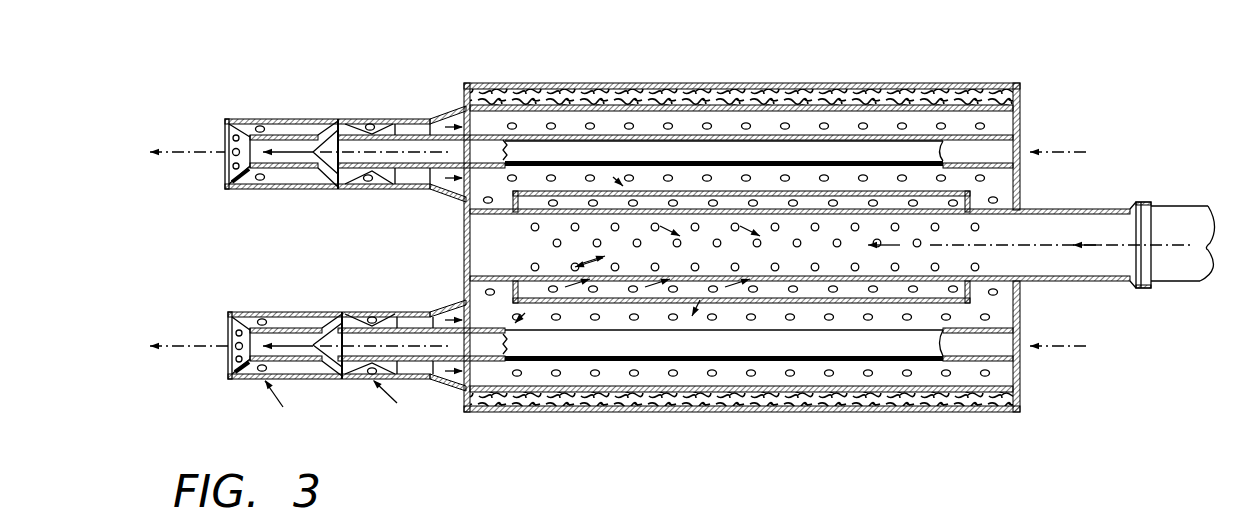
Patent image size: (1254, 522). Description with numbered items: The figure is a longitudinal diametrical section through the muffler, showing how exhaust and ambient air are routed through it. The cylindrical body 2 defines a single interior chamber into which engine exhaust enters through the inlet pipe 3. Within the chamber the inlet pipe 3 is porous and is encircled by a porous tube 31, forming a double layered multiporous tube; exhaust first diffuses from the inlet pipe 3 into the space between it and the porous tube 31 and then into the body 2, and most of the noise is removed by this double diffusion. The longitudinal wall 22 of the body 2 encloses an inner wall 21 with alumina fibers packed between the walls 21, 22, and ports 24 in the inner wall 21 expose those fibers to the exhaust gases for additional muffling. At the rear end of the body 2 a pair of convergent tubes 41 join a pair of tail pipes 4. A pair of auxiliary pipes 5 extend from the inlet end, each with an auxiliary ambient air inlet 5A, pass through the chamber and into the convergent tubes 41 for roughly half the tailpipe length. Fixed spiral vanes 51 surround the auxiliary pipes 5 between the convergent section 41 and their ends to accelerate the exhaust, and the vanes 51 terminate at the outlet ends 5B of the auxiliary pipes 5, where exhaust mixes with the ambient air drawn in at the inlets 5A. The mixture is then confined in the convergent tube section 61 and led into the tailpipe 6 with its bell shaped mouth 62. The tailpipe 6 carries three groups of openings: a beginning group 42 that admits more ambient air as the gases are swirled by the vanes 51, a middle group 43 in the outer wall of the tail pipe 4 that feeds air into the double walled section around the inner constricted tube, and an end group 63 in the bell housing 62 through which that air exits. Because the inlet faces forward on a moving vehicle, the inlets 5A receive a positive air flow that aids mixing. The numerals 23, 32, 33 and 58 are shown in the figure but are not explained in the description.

The cylindrical body 2 is at (990, 86).
The inlet pipe 3 is at (1082, 225).
The tail pipe 4 is at (248, 119).
The auxiliary pipe 5 is at (614, 150).
The auxiliary ambient air inlet 5A is at (1024, 137).
The outlet end of auxiliary pipe 5B is at (327, 248).
The tail pipe 6 is at (300, 135).
The inner wall 21 is at (953, 126).
The longitudinal wall 22 is at (900, 86).
The insulation layer 23 is at (865, 103).
The ports 24 is at (829, 124).
The porous tube 31 is at (712, 200).
The inlet pipe perforations 32 is at (775, 230).
The intermediate chamber 33 is at (665, 185).
The convergent tube 41 is at (432, 108).
The beginning group of openings 42 is at (357, 190).
The middle group of openings 43 is at (263, 118).
The fixed spiral vanes 51 is at (355, 120).
The end plate 58 is at (332, 172).
The convergent tube section 61 is at (330, 170).
The bell shaped mouth 62 is at (243, 189).
The end group of openings 63 is at (226, 168).